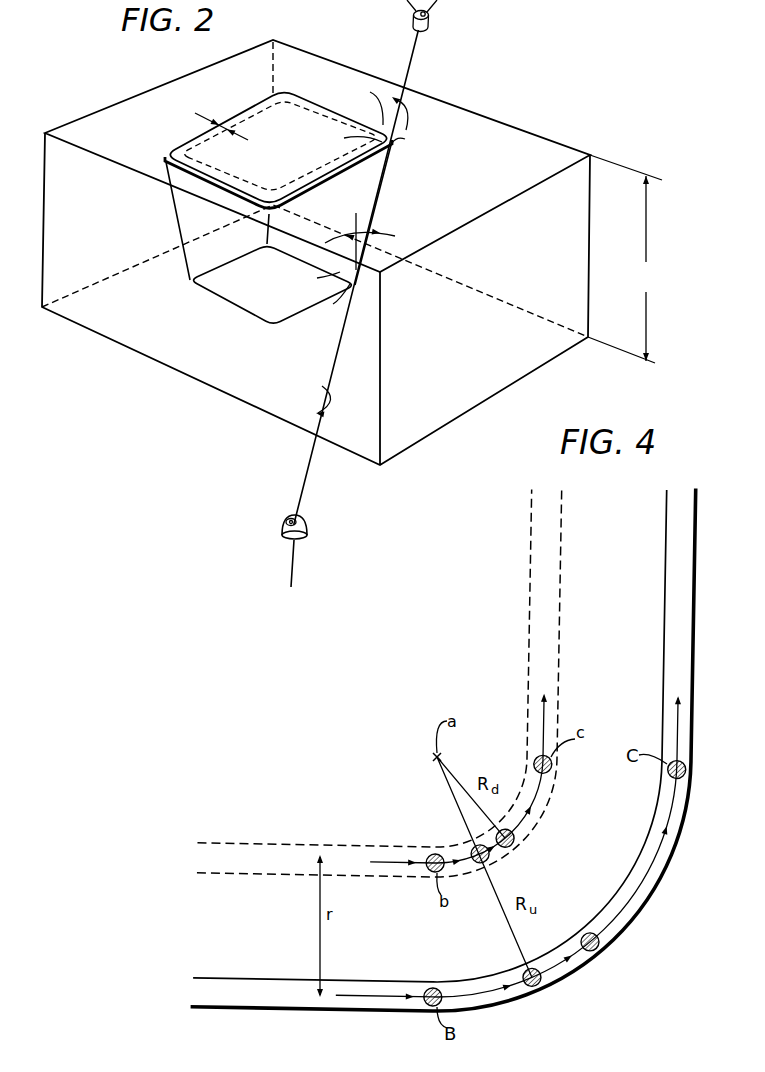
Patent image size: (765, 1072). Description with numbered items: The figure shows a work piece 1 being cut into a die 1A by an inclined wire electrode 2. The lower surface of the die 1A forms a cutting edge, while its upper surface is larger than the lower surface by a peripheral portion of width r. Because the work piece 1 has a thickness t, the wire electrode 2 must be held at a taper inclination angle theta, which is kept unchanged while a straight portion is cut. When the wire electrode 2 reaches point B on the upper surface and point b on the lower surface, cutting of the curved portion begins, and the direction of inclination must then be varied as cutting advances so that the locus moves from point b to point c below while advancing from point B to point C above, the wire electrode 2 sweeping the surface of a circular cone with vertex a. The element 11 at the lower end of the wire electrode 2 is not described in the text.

The work piece 1 is at (548, 142).
The die 1A is at (302, 112).
The wire electrode 2 is at (416, 54).
The weight 11 is at (308, 528).